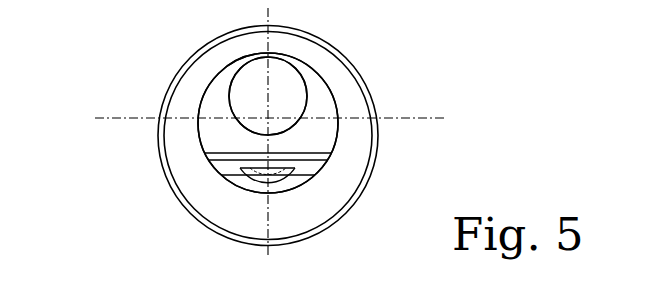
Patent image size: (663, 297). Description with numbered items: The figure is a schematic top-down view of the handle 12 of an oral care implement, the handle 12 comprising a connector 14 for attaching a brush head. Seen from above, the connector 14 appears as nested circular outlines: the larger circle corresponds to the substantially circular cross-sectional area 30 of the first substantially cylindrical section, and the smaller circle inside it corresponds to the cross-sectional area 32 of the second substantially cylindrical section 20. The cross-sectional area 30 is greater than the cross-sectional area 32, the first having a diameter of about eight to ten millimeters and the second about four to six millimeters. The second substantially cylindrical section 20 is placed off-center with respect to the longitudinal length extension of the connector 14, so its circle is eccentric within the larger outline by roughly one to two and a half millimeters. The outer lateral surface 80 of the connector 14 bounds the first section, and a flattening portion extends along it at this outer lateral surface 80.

The handle 12 is at (376, 105).
The connector 14 is at (335, 96).
The second substantially cylindrical section 20 is at (228, 91).
The cross-sectional area 30 is at (358, 198).
The cross-sectional area 32 is at (257, 105).
The outer lateral surface 80 is at (340, 127).